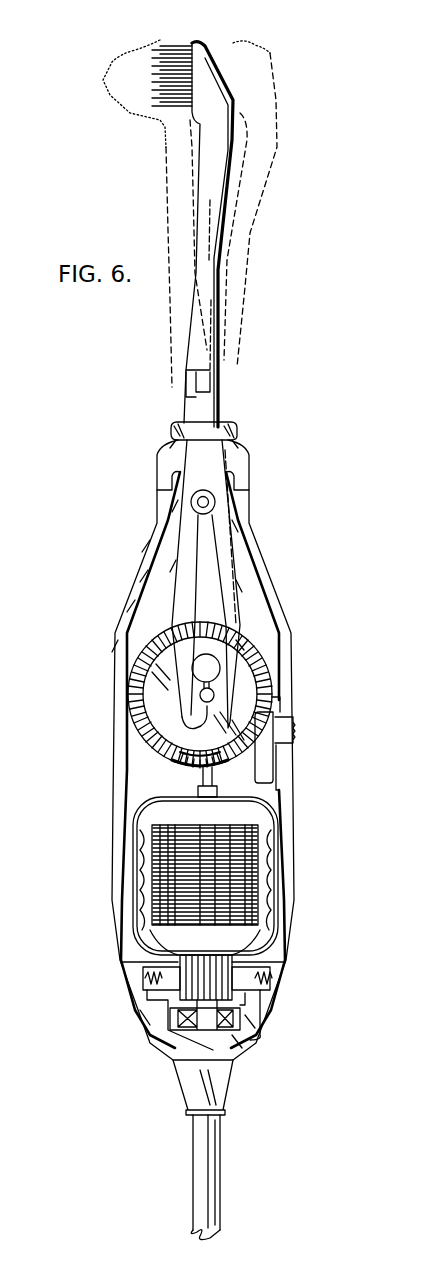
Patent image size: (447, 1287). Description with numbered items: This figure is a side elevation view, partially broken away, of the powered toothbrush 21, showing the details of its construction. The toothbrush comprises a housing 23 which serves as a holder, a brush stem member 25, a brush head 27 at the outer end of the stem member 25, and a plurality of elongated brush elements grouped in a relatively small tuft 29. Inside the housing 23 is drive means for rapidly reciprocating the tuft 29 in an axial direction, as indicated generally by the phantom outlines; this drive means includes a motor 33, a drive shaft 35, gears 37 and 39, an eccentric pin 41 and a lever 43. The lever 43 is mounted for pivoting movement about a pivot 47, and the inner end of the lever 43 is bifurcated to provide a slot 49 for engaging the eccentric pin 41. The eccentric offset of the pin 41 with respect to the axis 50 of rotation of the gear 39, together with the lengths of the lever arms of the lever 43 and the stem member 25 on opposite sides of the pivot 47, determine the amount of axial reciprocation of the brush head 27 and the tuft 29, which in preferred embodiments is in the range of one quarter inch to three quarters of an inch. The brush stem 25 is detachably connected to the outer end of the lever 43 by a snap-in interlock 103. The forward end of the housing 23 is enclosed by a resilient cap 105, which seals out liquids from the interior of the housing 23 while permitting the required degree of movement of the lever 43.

The powered toothbrush 21 is at (92, 556).
The housing 23 is at (124, 780).
The brush stem member 25 is at (218, 290).
The brush head 27 is at (196, 48).
The tuft 29 is at (161, 29).
The motor 33 is at (160, 815).
The drive shaft 35 is at (199, 780).
The gear 37 is at (180, 753).
The gear 39 is at (131, 718).
The eccentric pin 41 is at (205, 668).
The lever 43 is at (225, 582).
The pivot 47 is at (209, 502).
The slot 49 is at (181, 719).
The axis of rotation 50 is at (214, 692).
The snap-in interlock 103 is at (205, 385).
The resilient cap 105 is at (158, 457).